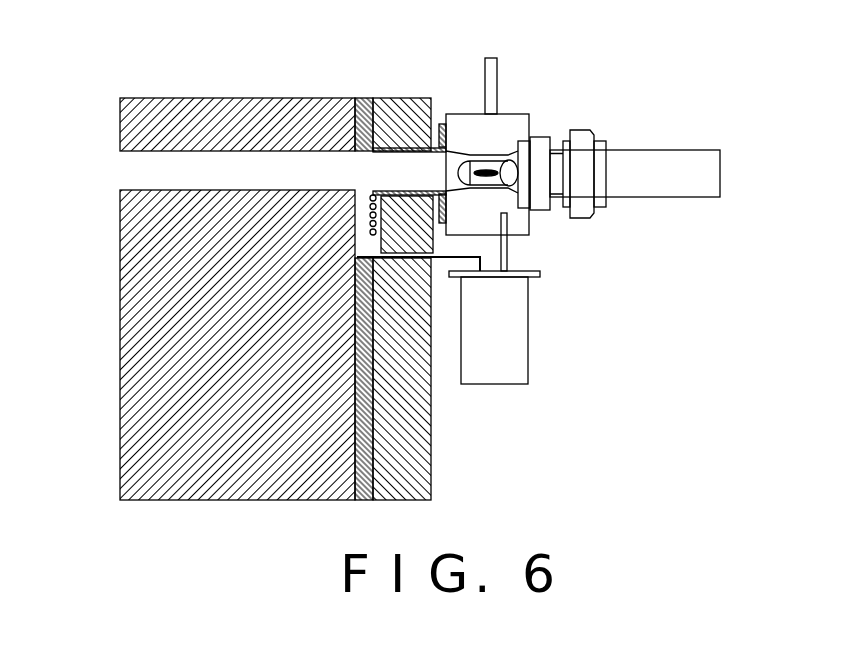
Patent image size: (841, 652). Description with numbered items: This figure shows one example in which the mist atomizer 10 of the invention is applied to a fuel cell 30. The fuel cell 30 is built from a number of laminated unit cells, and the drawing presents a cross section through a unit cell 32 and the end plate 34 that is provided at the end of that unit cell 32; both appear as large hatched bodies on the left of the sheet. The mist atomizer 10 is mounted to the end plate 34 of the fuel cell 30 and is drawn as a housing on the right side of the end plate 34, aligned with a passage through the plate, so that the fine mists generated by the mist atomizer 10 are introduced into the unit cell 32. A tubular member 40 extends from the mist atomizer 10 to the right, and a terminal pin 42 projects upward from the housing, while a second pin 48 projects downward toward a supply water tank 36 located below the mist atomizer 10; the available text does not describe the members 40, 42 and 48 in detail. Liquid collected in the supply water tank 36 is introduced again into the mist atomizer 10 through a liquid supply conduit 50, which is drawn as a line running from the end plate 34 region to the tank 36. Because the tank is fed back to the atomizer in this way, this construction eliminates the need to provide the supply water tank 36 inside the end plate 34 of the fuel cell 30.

The mist atomizer 10 is at (546, 112).
The fuel cell 30 is at (100, 372).
The unit cell 32 is at (140, 275).
The end plate 34 is at (420, 435).
The supply water tank 36 is at (529, 325).
The tube 40 is at (655, 150).
The terminal pin 42 is at (497, 77).
The lead pin 48 is at (507, 252).
The liquid supply conduit 50 is at (507, 243).